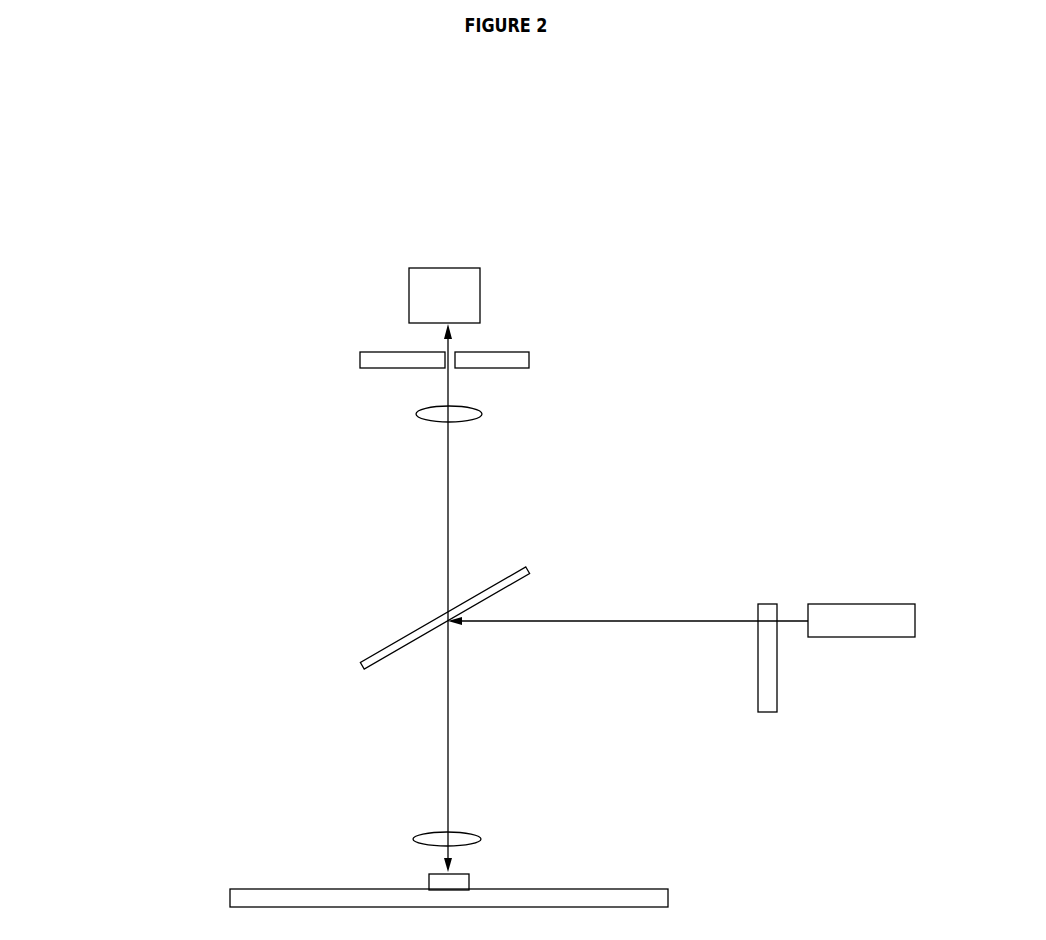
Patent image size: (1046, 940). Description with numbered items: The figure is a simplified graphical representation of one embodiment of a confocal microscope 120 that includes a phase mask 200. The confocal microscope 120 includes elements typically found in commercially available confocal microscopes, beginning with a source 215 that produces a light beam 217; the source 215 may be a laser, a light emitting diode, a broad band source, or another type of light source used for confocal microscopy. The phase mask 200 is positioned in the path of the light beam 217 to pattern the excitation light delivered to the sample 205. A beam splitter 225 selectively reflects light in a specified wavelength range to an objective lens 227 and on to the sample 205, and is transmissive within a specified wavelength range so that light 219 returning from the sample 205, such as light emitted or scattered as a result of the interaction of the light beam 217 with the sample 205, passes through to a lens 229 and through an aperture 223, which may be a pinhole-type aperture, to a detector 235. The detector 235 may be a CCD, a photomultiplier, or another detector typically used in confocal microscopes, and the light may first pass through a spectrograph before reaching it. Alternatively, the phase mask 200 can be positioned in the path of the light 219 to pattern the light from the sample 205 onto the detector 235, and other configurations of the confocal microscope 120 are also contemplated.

The confocal microscope 120 is at (293, 306).
The detector 235 is at (445, 268).
The aperture 223 is at (530, 358).
The lens 229 is at (417, 413).
The light 219 is at (447, 533).
The beam splitter 225 is at (390, 643).
The light beam 217 is at (637, 620).
The source 215 is at (827, 603).
The phase mask 200 is at (772, 710).
The objective lens 227 is at (417, 840).
The sample 205 is at (470, 878).